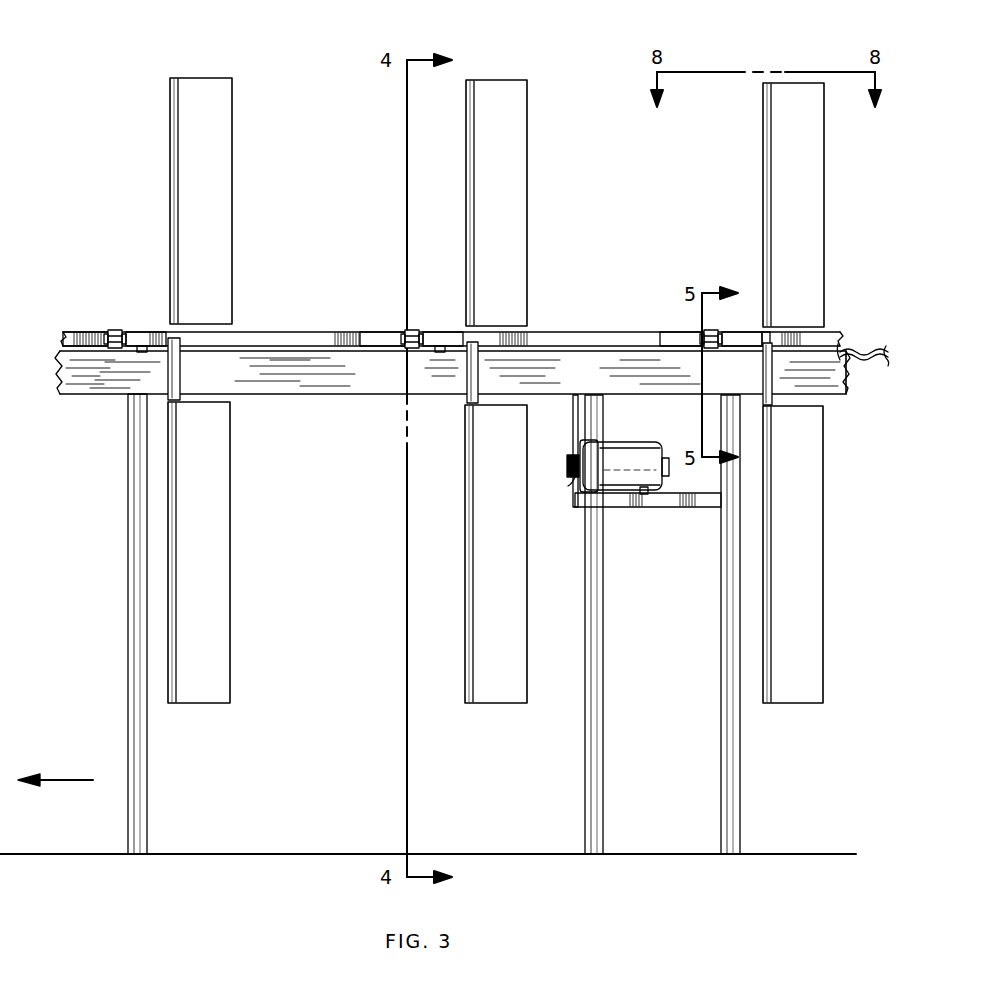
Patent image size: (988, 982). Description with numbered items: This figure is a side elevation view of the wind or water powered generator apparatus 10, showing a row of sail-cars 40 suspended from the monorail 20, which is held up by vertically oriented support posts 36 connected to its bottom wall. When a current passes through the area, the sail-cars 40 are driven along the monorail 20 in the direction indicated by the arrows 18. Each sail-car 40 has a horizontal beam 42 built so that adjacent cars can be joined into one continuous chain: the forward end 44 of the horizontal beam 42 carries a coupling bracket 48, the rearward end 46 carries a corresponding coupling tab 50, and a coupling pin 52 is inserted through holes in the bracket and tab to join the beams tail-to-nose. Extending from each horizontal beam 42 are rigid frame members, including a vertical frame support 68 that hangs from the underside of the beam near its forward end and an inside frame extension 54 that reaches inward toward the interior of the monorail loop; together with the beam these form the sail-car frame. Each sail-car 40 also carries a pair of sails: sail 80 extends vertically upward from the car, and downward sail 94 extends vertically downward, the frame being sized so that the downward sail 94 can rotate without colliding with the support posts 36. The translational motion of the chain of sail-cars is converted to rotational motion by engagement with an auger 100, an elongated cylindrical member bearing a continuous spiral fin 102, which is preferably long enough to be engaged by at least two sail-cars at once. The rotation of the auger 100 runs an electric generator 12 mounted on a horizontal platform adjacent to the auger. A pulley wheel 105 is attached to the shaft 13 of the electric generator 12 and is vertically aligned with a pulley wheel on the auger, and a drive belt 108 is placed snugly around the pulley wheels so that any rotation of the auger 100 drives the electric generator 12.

The generator apparatus 10 is at (96, 62).
The electric generator 12 is at (624, 452).
The shaft 13 is at (566, 462).
The arrows 18 is at (68, 781).
The monorail 20 is at (262, 392).
The support posts 36 is at (128, 593).
The sail-cars 40 is at (262, 266).
The horizontal beam 42 is at (280, 338).
The forward end 44 is at (136, 332).
The rearward end 46 is at (108, 332).
The coupling bracket 48 is at (124, 332).
The coupling tab 50 is at (64, 337).
The coupling pin 52 is at (113, 330).
The inside frame extension 54 is at (181, 366).
The vertical frame support 68 is at (142, 352).
The sail 80 is at (497, 202).
The downward sail 94 is at (495, 552).
The auger 100 is at (866, 360).
The spiral fin 102 is at (884, 348).
The pulley wheel 105 is at (570, 480).
The drive belt 108 is at (573, 432).